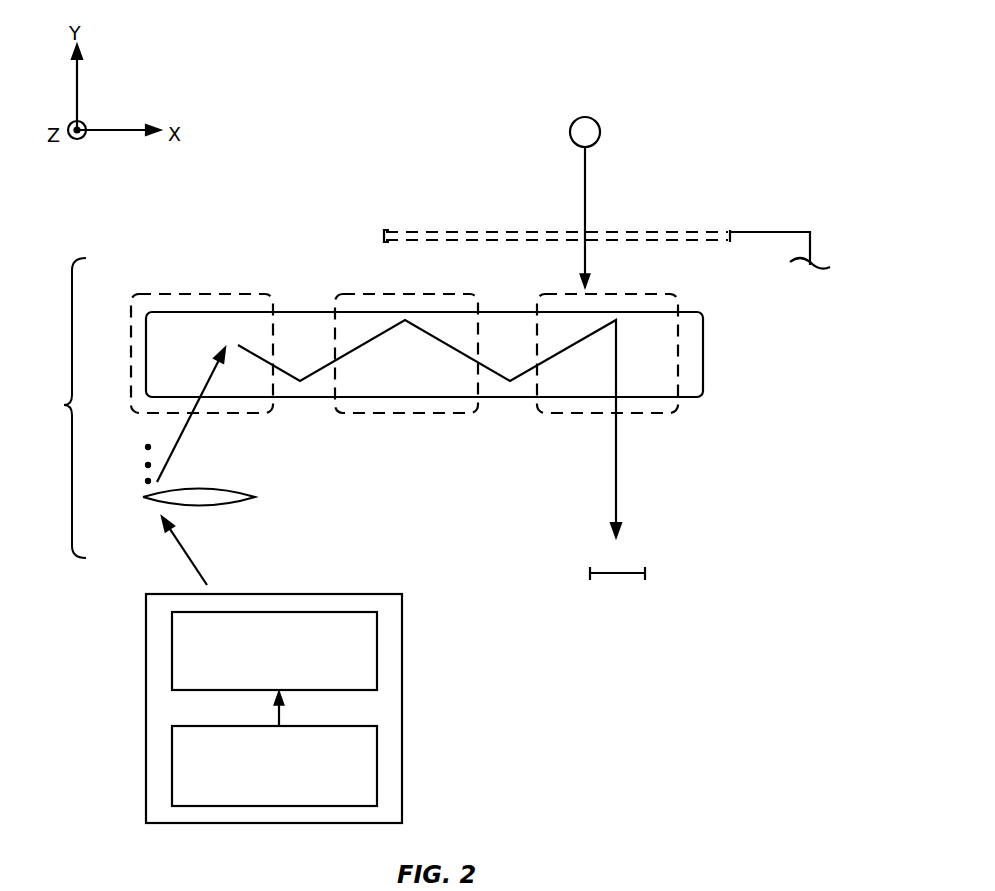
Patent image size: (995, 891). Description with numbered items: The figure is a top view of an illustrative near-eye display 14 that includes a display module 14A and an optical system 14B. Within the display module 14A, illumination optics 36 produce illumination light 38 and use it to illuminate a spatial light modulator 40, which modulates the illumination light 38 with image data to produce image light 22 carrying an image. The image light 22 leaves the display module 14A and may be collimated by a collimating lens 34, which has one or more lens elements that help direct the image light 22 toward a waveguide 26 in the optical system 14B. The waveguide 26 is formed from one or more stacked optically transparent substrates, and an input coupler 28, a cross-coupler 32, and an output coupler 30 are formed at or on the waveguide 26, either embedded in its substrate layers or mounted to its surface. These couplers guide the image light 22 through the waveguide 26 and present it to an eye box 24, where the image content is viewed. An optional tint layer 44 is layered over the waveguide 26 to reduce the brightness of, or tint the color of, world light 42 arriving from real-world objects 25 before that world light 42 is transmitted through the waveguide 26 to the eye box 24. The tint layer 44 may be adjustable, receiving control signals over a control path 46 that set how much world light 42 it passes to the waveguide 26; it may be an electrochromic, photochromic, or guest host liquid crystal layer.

The display 14 is at (565, 110).
The display module 14A is at (146, 607).
The optical system 14B is at (54, 408).
The image light 22 is at (180, 440).
The eye box 24 is at (620, 576).
The real-world objects 25 is at (600, 130).
The waveguide 26 is at (703, 353).
The input coupler 28 is at (194, 294).
The output coupler 30 is at (602, 294).
The cross-coupler 32 is at (402, 294).
The collimating lens 34 is at (266, 497).
The illumination optics 36 is at (377, 770).
The illumination light 38 is at (283, 713).
The spatial light modulator 40 is at (377, 650).
The world light 42 is at (587, 165).
The tint layer 44 is at (693, 232).
The control path 46 is at (810, 248).